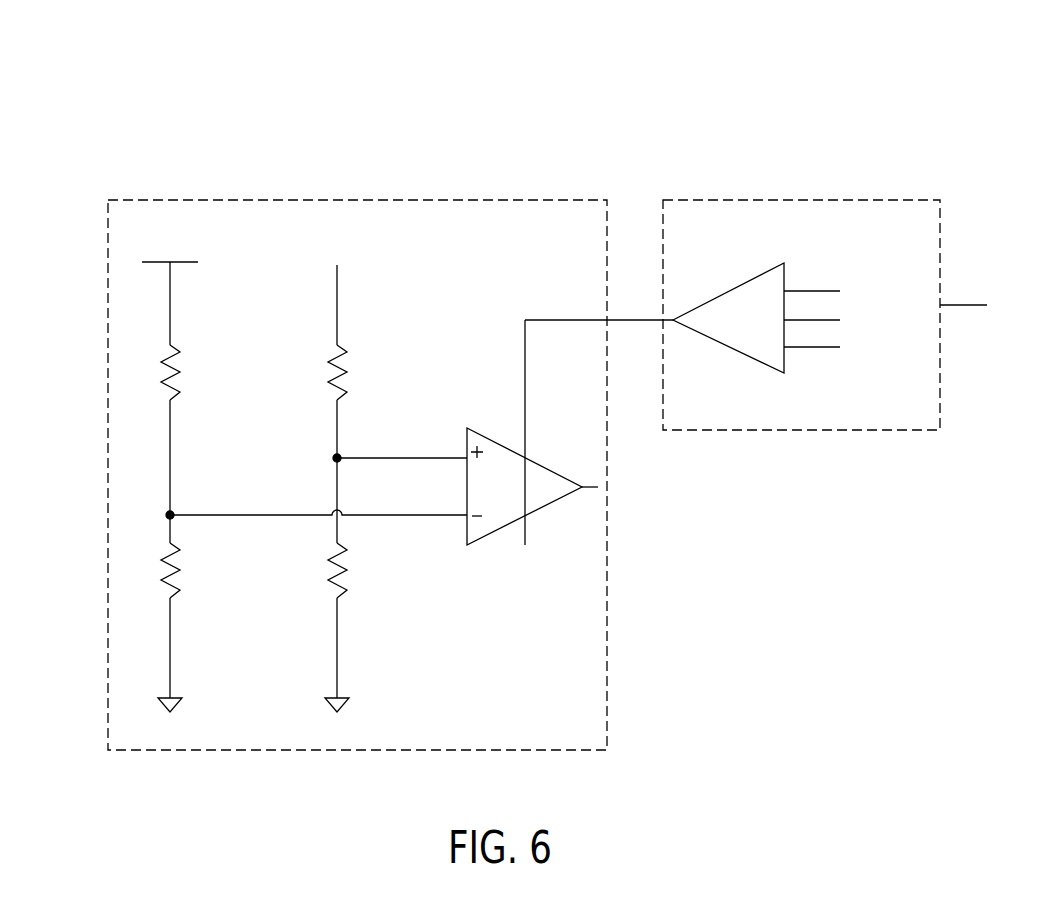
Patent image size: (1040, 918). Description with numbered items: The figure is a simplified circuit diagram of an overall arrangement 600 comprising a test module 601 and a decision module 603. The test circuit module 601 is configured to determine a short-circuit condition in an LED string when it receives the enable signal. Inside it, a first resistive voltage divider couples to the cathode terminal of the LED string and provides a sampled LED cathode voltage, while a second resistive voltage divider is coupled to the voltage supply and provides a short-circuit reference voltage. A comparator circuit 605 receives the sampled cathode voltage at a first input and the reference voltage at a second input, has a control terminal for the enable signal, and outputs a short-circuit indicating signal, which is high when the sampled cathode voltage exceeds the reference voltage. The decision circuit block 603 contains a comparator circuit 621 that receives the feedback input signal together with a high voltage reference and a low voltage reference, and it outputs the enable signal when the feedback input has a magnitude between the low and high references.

The LED current regulation circuit 600 is at (942, 116).
The test circuit module 601 is at (343, 199).
The circuit block 603 is at (788, 199).
The comparator circuit 605 is at (530, 504).
The comparator circuit 621 is at (763, 327).